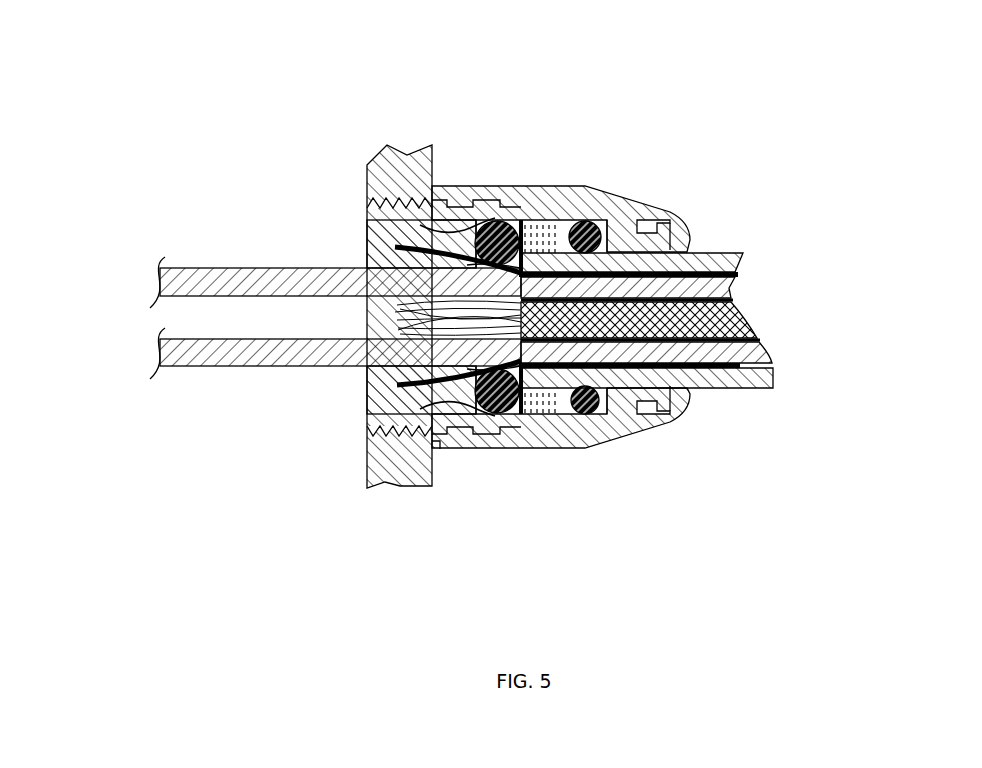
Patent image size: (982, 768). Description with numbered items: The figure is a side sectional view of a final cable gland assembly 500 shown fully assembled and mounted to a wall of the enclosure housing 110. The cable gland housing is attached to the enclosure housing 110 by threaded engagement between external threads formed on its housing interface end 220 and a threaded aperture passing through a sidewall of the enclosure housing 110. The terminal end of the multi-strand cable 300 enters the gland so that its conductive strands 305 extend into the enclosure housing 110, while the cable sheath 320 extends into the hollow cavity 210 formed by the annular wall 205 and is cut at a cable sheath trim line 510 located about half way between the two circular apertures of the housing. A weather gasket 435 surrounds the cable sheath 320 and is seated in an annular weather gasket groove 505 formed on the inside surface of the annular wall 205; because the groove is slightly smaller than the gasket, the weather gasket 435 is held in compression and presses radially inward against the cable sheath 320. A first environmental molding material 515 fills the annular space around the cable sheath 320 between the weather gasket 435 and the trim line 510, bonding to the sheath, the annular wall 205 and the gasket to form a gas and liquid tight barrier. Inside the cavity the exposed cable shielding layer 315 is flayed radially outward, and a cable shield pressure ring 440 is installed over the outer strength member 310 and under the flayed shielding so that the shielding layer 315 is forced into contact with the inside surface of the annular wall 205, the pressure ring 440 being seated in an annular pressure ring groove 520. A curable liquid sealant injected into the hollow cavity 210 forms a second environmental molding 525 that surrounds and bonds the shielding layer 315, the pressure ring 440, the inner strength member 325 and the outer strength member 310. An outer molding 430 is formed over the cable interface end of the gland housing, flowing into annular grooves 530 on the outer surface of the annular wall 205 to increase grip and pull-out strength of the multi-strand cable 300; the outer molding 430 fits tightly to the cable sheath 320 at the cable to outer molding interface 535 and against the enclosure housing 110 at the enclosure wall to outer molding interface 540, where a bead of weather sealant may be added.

The final cable gland assembly 500 is at (124, 143).
The cable sheath trim line 510 is at (521, 220).
The first environmental molding material 515 is at (549, 222).
The annular pressure ring groove 520 is at (498, 205).
The cable shield pressure ring 440 is at (478, 190).
The weather gasket 435 is at (585, 218).
The annular weather gasket groove 505 is at (598, 220).
The cable to outer molding interface 535 is at (690, 248).
The cable sheath 320 is at (740, 264).
The multi-strand cable 300 is at (790, 322).
The outer molding 430 is at (670, 422).
The annular wall 205 is at (618, 410).
The annular grooves 530 is at (600, 440).
The enclosure wall to outer molding interface 540 is at (433, 447).
The enclosure housing 110 is at (400, 485).
The housing interface end 220 is at (378, 487).
The outer strength member 310 is at (367, 396).
The hollow cavity 210 is at (328, 398).
The inner strength member 325 is at (405, 318).
The conductive strands 305 is at (190, 267).
The second environmental molding 525 is at (376, 247).
The cable shielding layer 315 is at (367, 203).